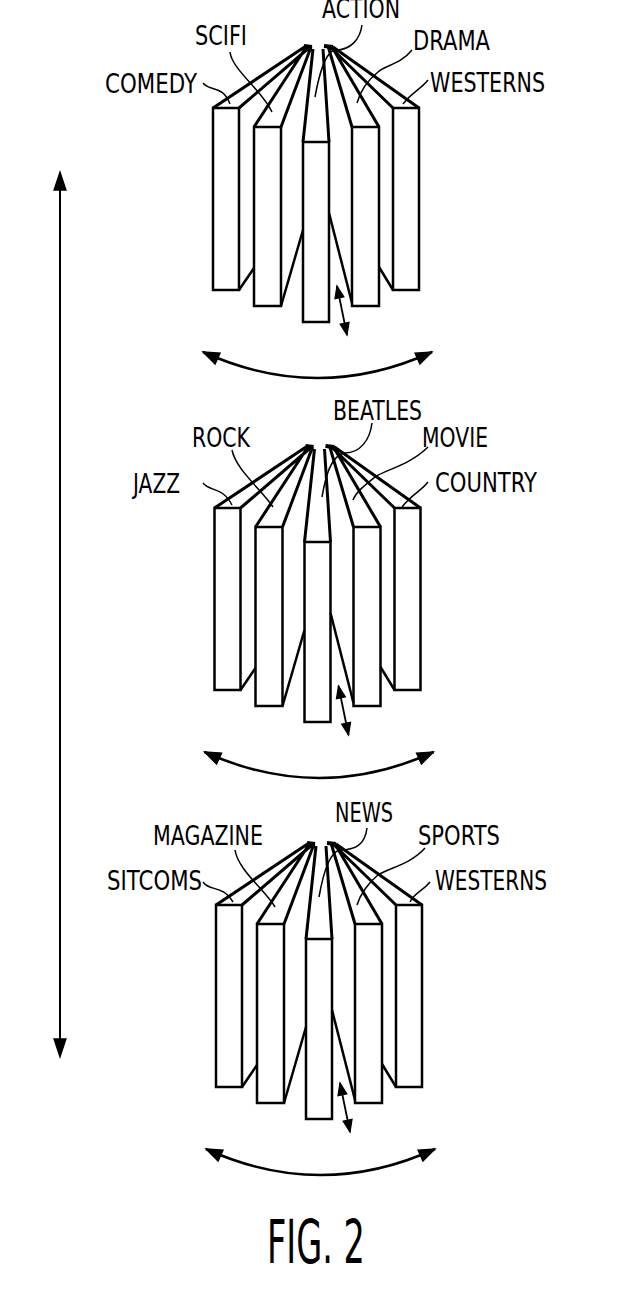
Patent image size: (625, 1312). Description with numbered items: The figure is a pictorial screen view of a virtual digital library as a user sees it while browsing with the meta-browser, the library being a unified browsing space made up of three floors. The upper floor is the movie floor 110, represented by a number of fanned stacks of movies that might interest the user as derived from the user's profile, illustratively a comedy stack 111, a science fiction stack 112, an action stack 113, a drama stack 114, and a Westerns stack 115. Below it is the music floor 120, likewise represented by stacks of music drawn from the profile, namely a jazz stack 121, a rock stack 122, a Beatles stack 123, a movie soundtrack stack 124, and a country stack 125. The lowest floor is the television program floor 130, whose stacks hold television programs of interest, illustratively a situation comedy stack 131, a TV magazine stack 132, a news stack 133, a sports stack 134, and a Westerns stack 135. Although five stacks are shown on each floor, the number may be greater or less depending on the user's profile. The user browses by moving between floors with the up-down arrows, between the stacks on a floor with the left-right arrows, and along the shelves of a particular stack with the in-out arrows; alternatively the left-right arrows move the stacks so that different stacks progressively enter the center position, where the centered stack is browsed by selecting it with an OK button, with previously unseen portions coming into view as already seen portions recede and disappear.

The movie floor 110 is at (162, 167).
The comedy stack 111 is at (213, 268).
The science fiction stack 112 is at (270, 306).
The action stack 113 is at (318, 322).
The drama stack 114 is at (372, 306).
The Westerns stack 115 is at (419, 287).
The music floor 120 is at (259, 512).
The jazz stack 121 is at (201, 599).
The rock stack 122 is at (271, 643).
The Beatles stack 123 is at (319, 656).
The movie soundtrack stack 124 is at (365, 641).
The country stack 125 is at (435, 602).
The television program floor 130 is at (260, 909).
The situation comedy stack 131 is at (202, 996).
The TV magazine stack 132 is at (272, 1040).
The news stack 133 is at (320, 1053).
The sports stack 134 is at (366, 1038).
The Westerns stack 135 is at (436, 999).